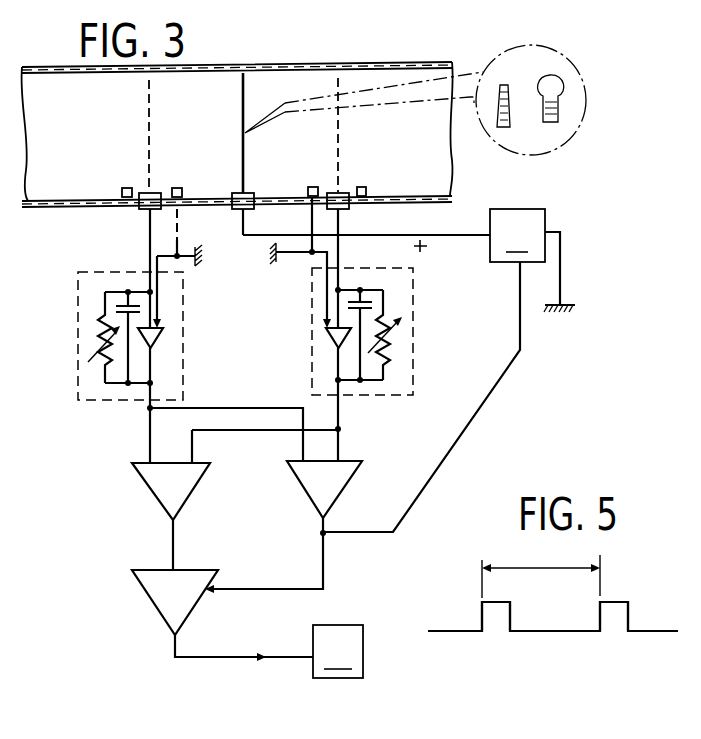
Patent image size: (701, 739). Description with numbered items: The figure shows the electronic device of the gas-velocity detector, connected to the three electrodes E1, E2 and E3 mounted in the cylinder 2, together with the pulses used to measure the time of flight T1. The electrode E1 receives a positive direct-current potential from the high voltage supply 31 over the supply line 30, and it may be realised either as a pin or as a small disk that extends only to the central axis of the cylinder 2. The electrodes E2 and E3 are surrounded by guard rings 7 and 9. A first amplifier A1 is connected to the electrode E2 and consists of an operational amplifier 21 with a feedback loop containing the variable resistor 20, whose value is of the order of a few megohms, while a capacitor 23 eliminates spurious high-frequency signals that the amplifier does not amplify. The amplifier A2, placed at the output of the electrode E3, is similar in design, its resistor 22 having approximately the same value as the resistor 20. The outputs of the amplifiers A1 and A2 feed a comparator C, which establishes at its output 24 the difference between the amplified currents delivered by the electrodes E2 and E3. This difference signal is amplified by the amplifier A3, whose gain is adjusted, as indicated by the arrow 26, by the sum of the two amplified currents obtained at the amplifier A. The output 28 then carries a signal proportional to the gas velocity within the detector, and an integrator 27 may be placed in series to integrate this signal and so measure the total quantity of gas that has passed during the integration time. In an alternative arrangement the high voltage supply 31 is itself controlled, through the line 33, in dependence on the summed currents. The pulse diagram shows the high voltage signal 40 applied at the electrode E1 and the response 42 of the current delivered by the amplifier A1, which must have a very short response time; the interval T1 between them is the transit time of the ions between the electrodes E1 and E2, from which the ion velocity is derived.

In FIG. 3, the cylinder 2 is at (370, 63).
In FIG. 3, the guard ring 7 is at (177, 188).
In FIG. 3, the guard ring 9 is at (358, 186).
In FIG. 3, the variable resistor 20 is at (103, 323).
In FIG. 3, the operational amplifier 21 is at (157, 340).
In FIG. 3, the resistor 22 is at (387, 345).
In FIG. 3, the capacitor 23 is at (125, 300).
In FIG. 3, the comparator output signal 24 is at (173, 548).
In FIG. 3, the gain adjustment arrow 26 is at (263, 589).
In FIG. 3, the integrator 27 is at (338, 651).
In FIG. 3, the output 28 is at (240, 632).
In FIG. 3, the supply line 30 is at (393, 232).
In FIG. 3, the high voltage supply 31 is at (532, 260).
In FIG. 3, the line 33 is at (482, 408).
In FIG. 5, the high voltage signal 40 is at (480, 618).
In FIG. 5, the response 42 is at (628, 613).
In FIG. 3, the electrode E1 is at (241, 147).
In FIG. 3, the electrode E2 is at (147, 153).
In FIG. 3, the electrode E3 is at (340, 141).
In FIG. 3, the first amplifier A1 is at (100, 402).
In FIG. 3, the amplifier A2 is at (382, 397).
In FIG. 3, the amplifier A3 is at (150, 590).
In FIG. 3, the amplifier A is at (332, 489).
In FIG. 3, the comparator C is at (164, 488).
In FIG. 5, the time of flight T1 is at (541, 569).